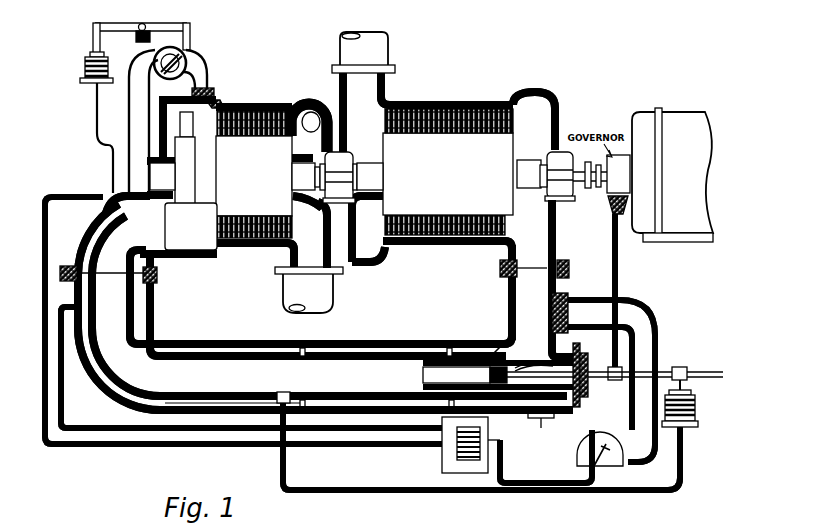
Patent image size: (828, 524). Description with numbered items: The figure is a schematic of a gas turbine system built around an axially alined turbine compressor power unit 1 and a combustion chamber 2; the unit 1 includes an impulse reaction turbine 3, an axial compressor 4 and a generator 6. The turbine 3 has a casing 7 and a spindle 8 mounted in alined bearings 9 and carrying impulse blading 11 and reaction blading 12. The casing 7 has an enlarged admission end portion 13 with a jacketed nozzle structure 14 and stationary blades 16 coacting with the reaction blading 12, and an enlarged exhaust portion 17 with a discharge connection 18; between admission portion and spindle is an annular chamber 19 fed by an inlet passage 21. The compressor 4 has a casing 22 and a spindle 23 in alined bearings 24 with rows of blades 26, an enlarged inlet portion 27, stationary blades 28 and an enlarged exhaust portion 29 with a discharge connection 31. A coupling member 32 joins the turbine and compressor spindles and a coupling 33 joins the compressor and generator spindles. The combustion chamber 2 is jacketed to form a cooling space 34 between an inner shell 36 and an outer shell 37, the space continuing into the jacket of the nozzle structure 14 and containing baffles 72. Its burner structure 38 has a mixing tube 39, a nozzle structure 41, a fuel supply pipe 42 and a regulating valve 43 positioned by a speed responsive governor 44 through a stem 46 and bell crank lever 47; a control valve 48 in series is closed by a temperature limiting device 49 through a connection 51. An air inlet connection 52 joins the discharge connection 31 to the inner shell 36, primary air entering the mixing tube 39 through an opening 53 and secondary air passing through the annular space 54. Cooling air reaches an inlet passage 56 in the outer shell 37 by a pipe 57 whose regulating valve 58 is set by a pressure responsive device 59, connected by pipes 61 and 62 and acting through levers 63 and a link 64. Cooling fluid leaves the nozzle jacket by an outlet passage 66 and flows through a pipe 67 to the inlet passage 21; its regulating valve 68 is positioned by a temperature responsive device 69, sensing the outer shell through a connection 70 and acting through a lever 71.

The turbine compressor power unit 1 is at (307, 57).
The combustion chamber 2 is at (321, 361).
The turbine 3 is at (246, 189).
The axial compressor 4 is at (449, 189).
The generator 6 is at (680, 176).
The casing 7 is at (258, 108).
The spindle 8 is at (310, 122).
The alined bearings 9 is at (234, 183).
The impulse blading 11 is at (188, 230).
The reaction blading 12 is at (286, 219).
The enlarged admission end portion 13 is at (166, 96).
The jacketed nozzle structure 14 is at (160, 262).
The stationary blades 16 is at (255, 255).
The enlarged exhaust portion 17 is at (311, 96).
The discharge connection 18 is at (275, 277).
The annular chamber 19 is at (193, 177).
The inlet passage 21 is at (215, 98).
The casing 22 is at (438, 247).
The spindle 23 is at (517, 141).
The alined bearings 24 is at (449, 175).
The blades 26 is at (503, 219).
The enlarged inlet portion 27 is at (368, 262).
The stationary blades 28 is at (447, 253).
The enlarged exhaust portion 29 is at (561, 110).
The discharge connection 31 is at (512, 259).
The coupling member 32 is at (332, 168).
The coupling 33 is at (557, 176).
The cooling space 34 is at (176, 341).
The inner shell 36 is at (170, 360).
The outer shell 37 is at (94, 222).
The burner structure 38 is at (580, 303).
The mixing tube 39 is at (422, 370).
The nozzle structure 41 is at (488, 375).
The fuel supply pipe 42 is at (706, 371).
The regulating valve 43 is at (611, 381).
The speed responsive governor 44 is at (613, 181).
The stem 46 is at (619, 285).
The bell crank lever 47 is at (611, 205).
The control valve 48 is at (677, 367).
The temperature limiting device 49 is at (702, 415).
The connection 51 is at (643, 494).
The air inlet connection 52 is at (508, 293).
The opening 53 is at (530, 363).
The annular space 54 is at (497, 346).
The inlet passage 56 is at (541, 428).
The pipe 57 is at (661, 348).
The regulating valve 58 is at (613, 460).
The pressure responsive device 59 is at (423, 470).
The pipe 61 is at (55, 195).
The pipe 62 is at (44, 344).
The levers 63 is at (503, 461).
The link 64 is at (558, 478).
The cooling fluid outlet passage 66 is at (140, 216).
The pipe 67 is at (129, 119).
The regulating valve 68 is at (188, 58).
The temperature responsive device 69 is at (64, 76).
The connection 70 is at (97, 133).
The lever 71 is at (160, 23).
The baffles 72 is at (310, 346).